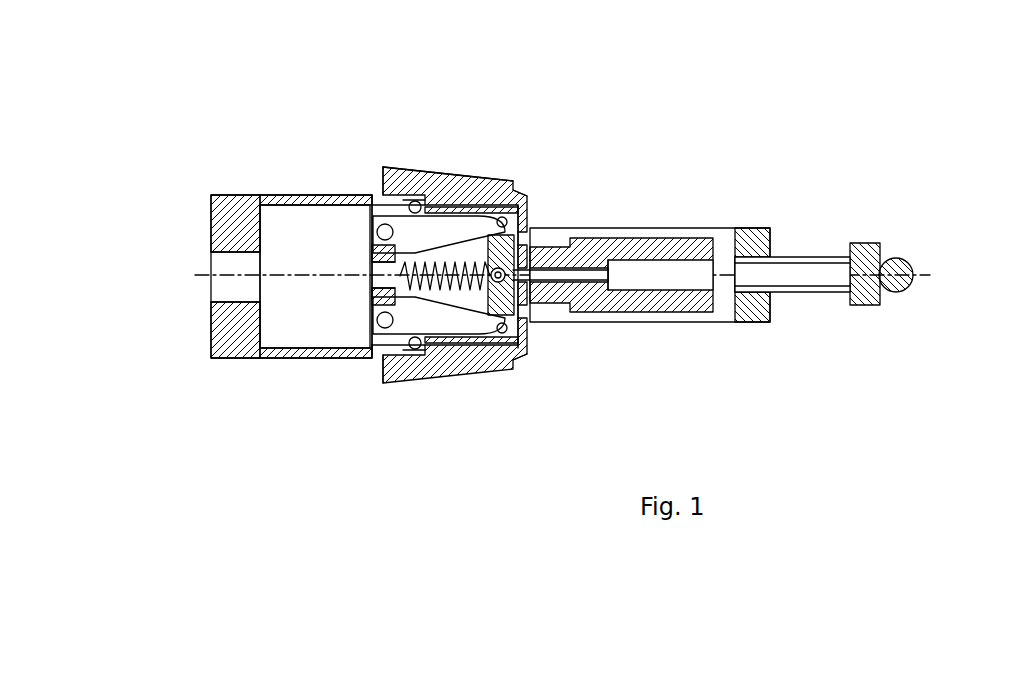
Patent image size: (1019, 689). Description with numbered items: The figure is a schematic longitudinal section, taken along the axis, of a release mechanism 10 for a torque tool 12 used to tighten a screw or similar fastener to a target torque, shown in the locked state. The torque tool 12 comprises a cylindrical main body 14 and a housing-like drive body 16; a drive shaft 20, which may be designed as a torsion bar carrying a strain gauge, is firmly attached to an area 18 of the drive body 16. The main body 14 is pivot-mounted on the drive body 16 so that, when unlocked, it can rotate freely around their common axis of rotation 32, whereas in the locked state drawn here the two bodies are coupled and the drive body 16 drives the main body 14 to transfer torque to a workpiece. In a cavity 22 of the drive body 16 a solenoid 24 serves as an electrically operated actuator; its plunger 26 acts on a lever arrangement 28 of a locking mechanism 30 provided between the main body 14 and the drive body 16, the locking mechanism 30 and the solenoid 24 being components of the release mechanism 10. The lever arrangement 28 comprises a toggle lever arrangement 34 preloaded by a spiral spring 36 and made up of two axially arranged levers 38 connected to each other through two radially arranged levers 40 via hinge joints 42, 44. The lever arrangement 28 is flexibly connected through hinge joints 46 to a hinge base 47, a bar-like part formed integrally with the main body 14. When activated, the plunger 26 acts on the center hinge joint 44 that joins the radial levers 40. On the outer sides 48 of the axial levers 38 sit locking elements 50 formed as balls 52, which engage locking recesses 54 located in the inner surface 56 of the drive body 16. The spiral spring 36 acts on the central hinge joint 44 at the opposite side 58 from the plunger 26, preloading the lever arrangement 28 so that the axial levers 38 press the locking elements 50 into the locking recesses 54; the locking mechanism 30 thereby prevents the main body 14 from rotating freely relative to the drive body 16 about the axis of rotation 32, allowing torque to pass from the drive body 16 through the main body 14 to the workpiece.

The release mechanism 10 is at (593, 158).
The torque tool 12 is at (368, 135).
The main body 14 is at (225, 362).
The drive body 16 is at (665, 321).
The area 18 is at (775, 312).
The drive shaft 20 is at (812, 256).
The cavity 22 is at (652, 255).
The solenoid 24 is at (672, 270).
The plunger 26 is at (582, 285).
The lever arrangement 28 is at (405, 352).
The locking mechanism 30 is at (382, 180).
The axis of rotation 32 is at (283, 273).
The toggle lever arrangement 34 is at (493, 370).
The spiral spring 36 is at (441, 297).
The axial levers 38 is at (475, 372).
The radial levers 40 is at (520, 315).
The hinge joints 42 is at (505, 216).
The center hinge joint 44 is at (529, 195).
The hinge joints 46 is at (380, 332).
The hinge base 47 is at (372, 318).
The outer sides 48 is at (460, 322).
The locking elements 50 is at (416, 200).
The balls 52 is at (386, 388).
The locking recesses 54 is at (422, 196).
The inner surface 56 is at (370, 205).
The opposite side 58 is at (483, 200).